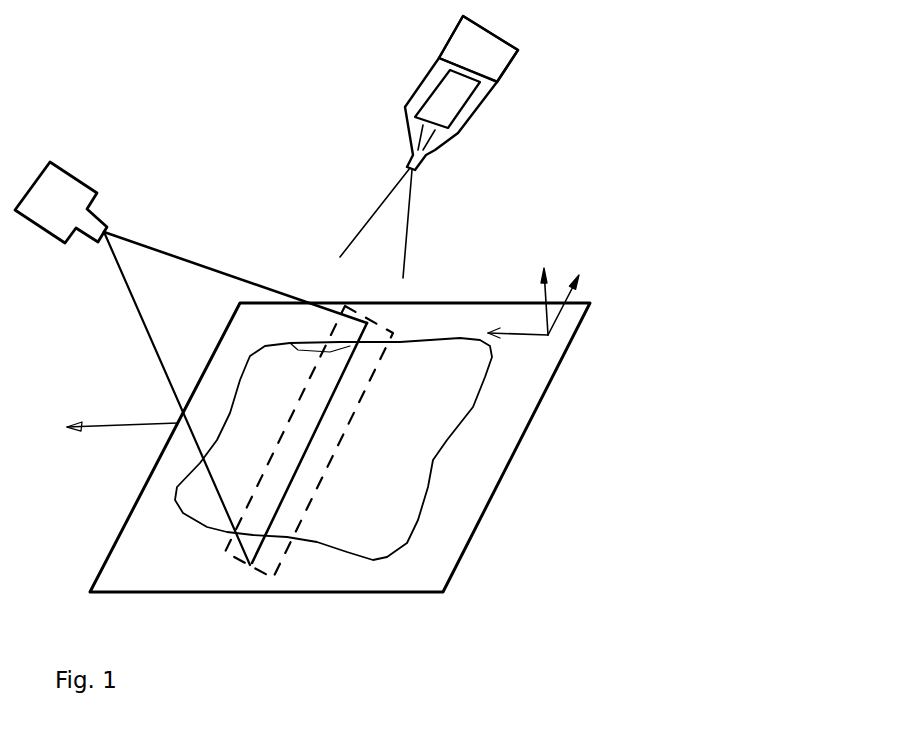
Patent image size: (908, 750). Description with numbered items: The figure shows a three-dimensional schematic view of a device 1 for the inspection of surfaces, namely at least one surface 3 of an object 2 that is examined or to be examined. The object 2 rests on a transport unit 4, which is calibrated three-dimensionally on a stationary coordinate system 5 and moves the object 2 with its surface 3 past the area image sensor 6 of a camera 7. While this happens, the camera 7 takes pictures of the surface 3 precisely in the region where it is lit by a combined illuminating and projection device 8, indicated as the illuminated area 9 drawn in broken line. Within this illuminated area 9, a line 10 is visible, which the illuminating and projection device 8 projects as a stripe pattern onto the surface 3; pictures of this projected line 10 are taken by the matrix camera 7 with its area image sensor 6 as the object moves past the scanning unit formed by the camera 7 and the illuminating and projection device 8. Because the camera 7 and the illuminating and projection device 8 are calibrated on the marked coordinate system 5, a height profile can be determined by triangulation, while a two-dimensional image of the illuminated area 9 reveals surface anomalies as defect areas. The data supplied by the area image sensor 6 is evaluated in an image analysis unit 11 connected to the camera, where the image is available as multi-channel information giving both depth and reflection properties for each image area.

The device 1 is at (240, 114).
The object 2 is at (470, 459).
The surface 3 is at (313, 480).
The transport unit 4 is at (450, 575).
The stationary coordinate system 5 is at (565, 298).
The area image sensor 6 is at (445, 100).
The camera 7 is at (405, 93).
The combined illuminating and projection device 8 is at (61, 177).
The illuminated area 9 is at (244, 560).
The line 10 is at (290, 346).
The image analysis unit 11 is at (480, 45).